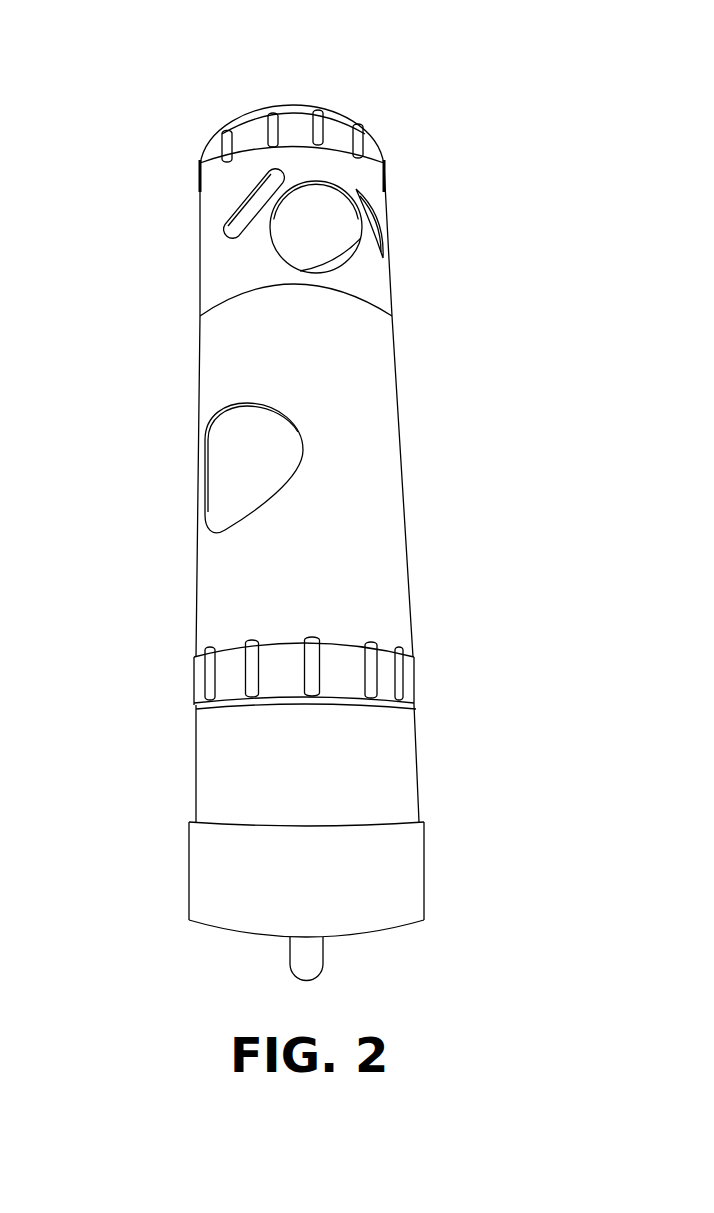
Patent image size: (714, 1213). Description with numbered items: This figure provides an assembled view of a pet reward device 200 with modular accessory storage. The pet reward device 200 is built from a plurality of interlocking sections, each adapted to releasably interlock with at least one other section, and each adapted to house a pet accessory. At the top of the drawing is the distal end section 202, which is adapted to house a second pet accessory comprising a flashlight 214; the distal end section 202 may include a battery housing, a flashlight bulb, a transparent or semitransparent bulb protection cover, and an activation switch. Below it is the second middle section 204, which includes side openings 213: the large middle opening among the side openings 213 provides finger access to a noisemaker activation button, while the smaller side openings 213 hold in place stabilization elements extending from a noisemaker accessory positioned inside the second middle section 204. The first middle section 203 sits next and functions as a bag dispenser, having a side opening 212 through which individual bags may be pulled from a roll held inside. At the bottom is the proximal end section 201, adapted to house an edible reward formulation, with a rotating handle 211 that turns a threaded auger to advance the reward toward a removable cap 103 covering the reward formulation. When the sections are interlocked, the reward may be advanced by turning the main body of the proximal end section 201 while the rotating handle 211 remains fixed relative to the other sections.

The pet reward device 200 is at (370, 71).
The distal end section 202 is at (389, 165).
The flashlight 214 is at (257, 112).
The second middle section 204 is at (391, 270).
The side openings 213 is at (299, 226).
The first middle section 203 is at (396, 455).
The side opening 212 is at (231, 480).
The rotating handle 211 is at (191, 682).
The proximal end section 201 is at (411, 762).
The removable cap 103 is at (183, 865).